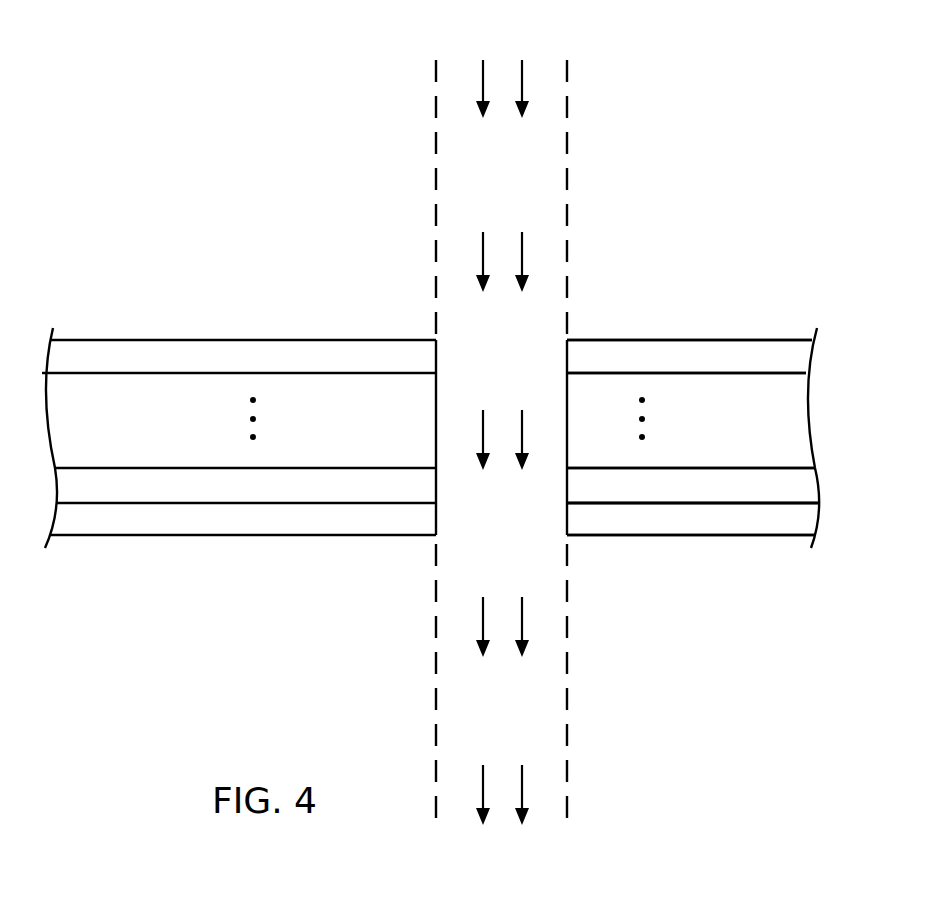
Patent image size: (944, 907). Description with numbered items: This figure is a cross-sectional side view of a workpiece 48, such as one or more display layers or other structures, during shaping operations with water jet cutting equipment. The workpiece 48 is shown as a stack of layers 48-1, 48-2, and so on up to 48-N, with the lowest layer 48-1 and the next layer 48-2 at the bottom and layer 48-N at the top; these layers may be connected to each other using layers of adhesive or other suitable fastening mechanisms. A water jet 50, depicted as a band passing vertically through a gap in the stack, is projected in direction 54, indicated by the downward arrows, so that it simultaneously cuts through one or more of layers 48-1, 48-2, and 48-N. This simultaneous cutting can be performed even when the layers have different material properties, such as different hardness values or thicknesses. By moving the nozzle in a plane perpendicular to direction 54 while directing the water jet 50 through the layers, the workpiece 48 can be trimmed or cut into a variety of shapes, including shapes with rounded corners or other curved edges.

The workpiece 48 is at (837, 335).
The layer 48-1 is at (687, 517).
The layer 48-2 is at (779, 490).
The layer 48-N is at (775, 350).
The water jet 50 is at (567, 143).
The direction 54 is at (522, 78).